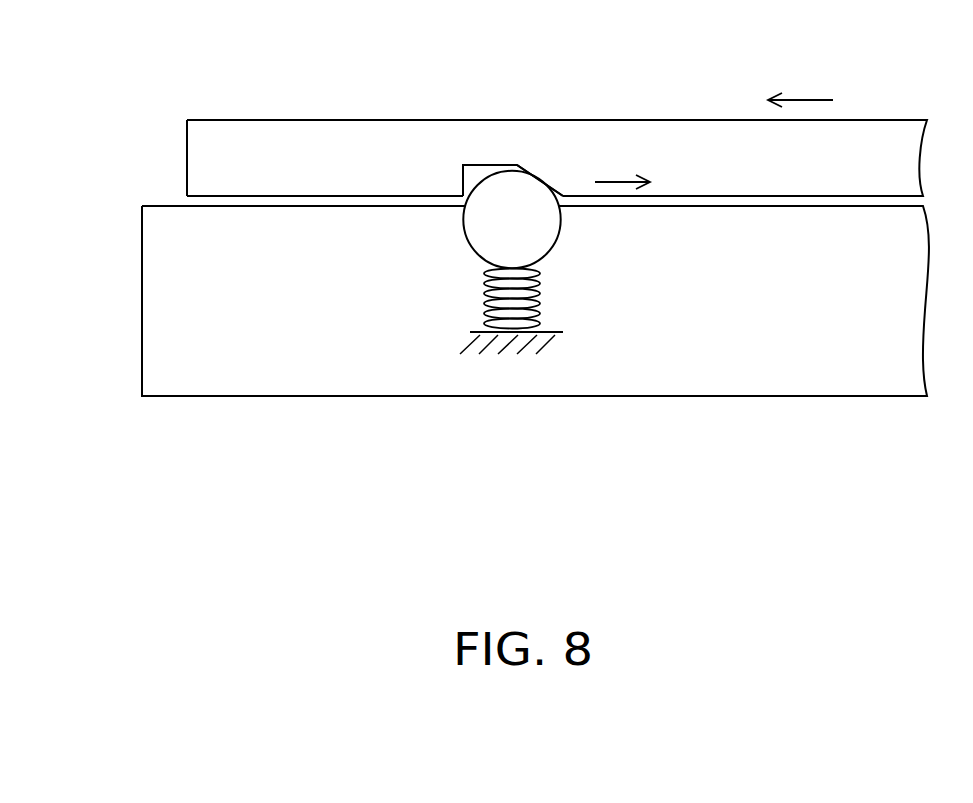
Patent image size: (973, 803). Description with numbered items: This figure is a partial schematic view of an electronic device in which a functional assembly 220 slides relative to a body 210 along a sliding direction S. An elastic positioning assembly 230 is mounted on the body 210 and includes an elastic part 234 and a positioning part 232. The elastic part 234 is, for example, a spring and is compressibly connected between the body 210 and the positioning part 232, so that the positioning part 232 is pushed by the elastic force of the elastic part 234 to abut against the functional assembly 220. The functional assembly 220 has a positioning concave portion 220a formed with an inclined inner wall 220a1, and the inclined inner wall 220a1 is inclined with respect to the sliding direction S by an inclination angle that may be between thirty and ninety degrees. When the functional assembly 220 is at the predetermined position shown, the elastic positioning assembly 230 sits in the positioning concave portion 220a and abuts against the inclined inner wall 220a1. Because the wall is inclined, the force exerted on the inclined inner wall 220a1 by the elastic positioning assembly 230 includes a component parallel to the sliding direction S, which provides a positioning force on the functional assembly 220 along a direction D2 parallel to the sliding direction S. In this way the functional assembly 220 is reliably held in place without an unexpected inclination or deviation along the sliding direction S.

The body 210 is at (259, 355).
The functional assembly 220 is at (303, 137).
The positioning concave portion 220a is at (551, 182).
The inclined inner wall 220a1 is at (533, 77).
The elastic positioning assembly 230 is at (581, 353).
The positioning part 232 is at (561, 228).
The elastic part 234 is at (540, 303).
The sliding direction S is at (805, 100).
The direction D2 is at (610, 182).